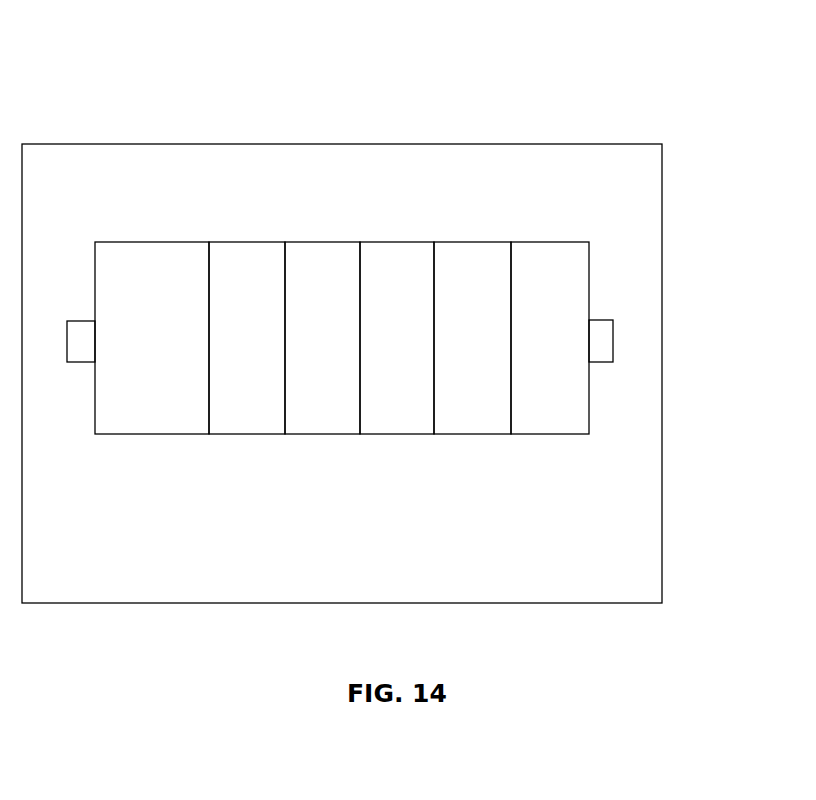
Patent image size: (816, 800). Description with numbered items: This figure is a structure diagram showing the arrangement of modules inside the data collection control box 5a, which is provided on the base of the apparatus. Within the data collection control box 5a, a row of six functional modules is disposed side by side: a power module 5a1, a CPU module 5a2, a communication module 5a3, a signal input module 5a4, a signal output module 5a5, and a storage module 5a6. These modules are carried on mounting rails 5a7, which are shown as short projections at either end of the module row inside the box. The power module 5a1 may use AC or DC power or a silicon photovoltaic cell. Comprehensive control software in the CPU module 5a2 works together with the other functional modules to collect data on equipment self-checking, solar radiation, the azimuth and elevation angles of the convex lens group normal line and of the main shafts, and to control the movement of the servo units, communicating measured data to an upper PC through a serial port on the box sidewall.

The data collection control box 5a is at (100, 144).
The power module 5a1 is at (150, 267).
The CPU module 5a2 is at (247, 268).
The communication module 5a3 is at (318, 268).
The signal input module 5a4 is at (392, 267).
The signal output module 5a5 is at (462, 267).
The storage module 5a6 is at (545, 267).
The mounting rails 5a7 is at (602, 320).